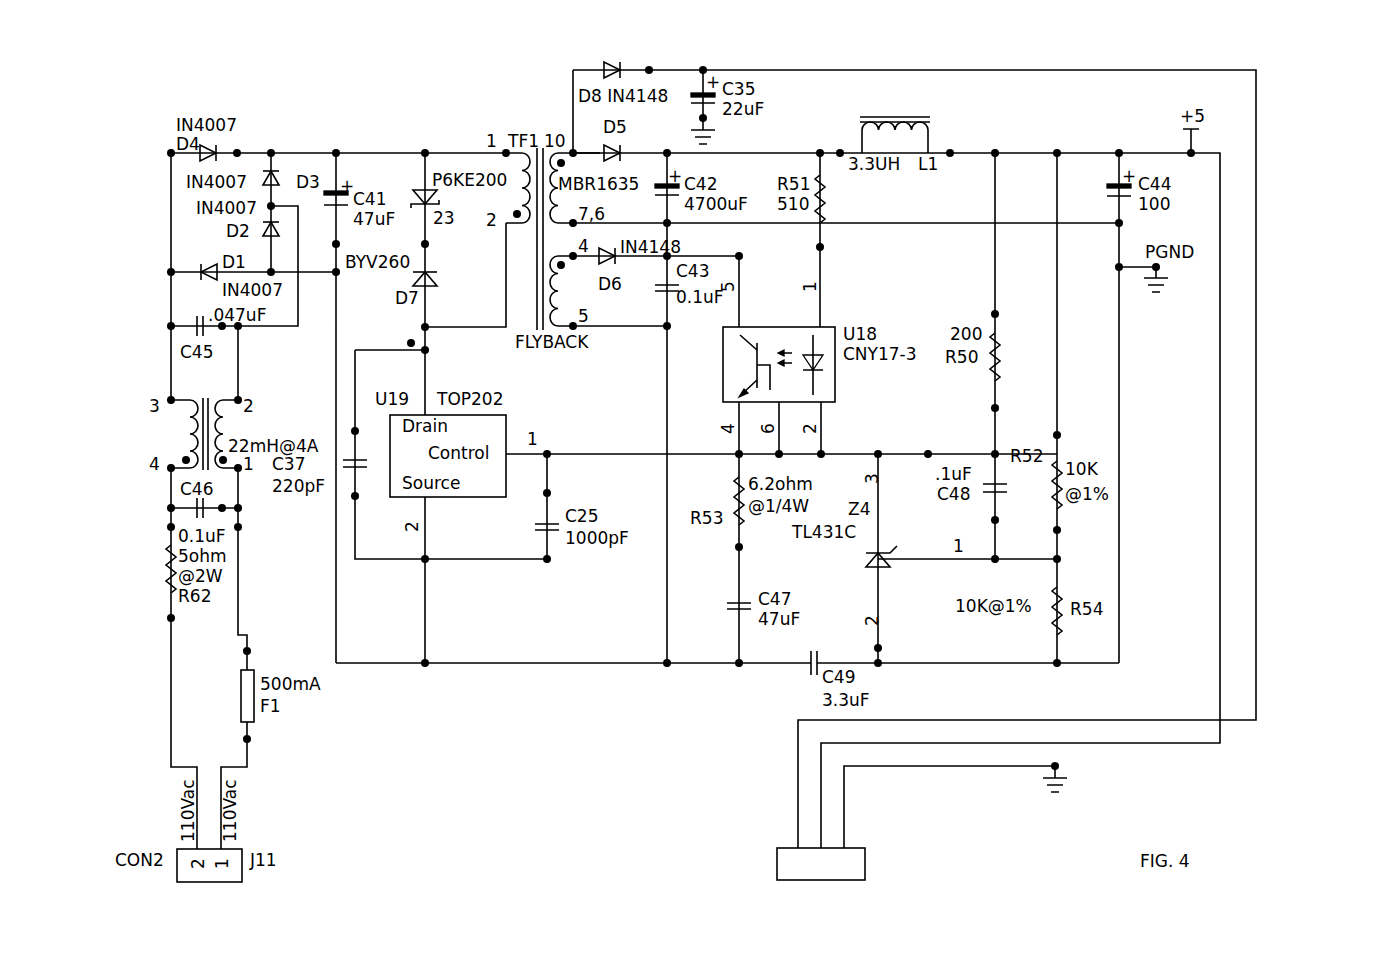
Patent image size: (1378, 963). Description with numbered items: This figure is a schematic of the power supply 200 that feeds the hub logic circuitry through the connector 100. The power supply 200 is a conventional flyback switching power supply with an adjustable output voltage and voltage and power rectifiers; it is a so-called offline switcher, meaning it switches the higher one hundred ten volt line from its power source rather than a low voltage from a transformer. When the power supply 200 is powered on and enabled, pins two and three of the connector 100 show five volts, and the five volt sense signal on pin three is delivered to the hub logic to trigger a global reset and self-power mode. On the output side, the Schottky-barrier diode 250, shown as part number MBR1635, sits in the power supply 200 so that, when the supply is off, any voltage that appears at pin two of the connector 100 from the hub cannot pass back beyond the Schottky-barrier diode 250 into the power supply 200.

The connector 100 is at (855, 845).
The power supply 200 is at (1284, 121).
The Schottky-barrier diode 250 is at (592, 150).